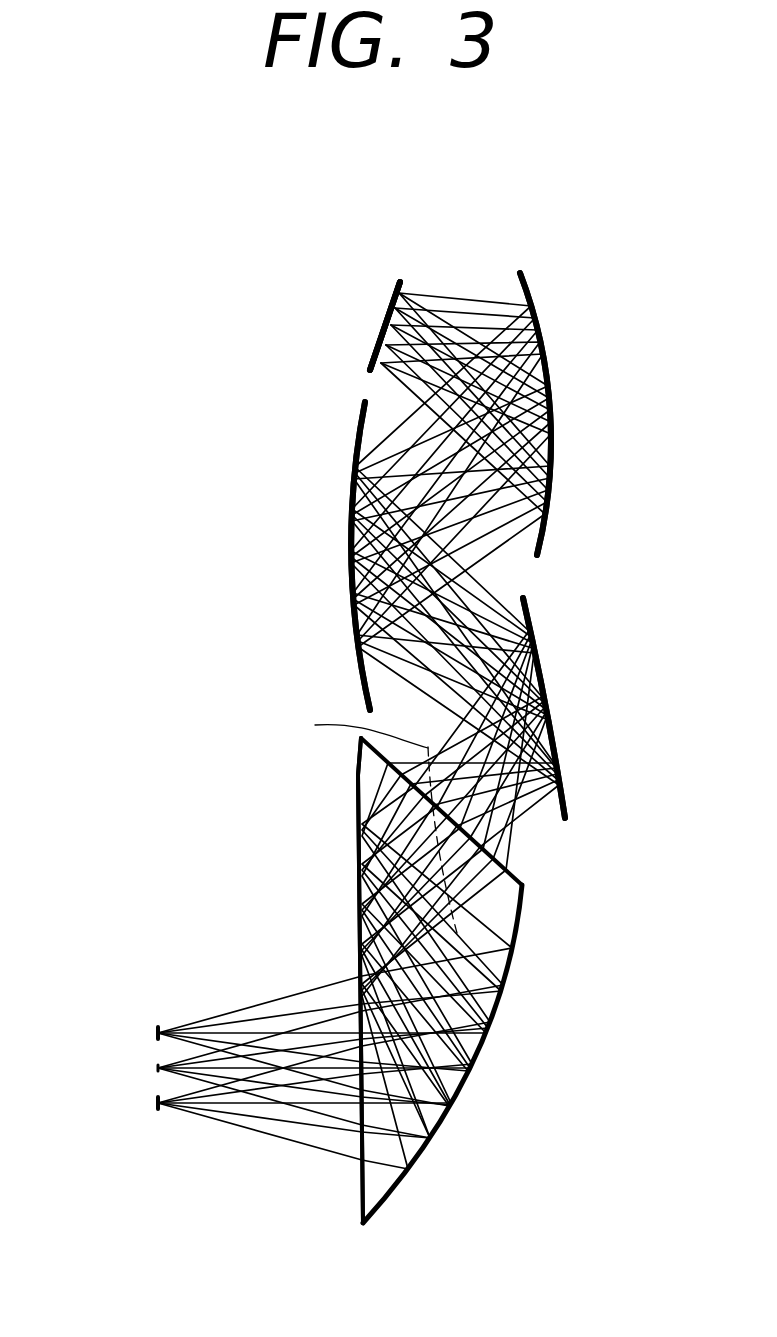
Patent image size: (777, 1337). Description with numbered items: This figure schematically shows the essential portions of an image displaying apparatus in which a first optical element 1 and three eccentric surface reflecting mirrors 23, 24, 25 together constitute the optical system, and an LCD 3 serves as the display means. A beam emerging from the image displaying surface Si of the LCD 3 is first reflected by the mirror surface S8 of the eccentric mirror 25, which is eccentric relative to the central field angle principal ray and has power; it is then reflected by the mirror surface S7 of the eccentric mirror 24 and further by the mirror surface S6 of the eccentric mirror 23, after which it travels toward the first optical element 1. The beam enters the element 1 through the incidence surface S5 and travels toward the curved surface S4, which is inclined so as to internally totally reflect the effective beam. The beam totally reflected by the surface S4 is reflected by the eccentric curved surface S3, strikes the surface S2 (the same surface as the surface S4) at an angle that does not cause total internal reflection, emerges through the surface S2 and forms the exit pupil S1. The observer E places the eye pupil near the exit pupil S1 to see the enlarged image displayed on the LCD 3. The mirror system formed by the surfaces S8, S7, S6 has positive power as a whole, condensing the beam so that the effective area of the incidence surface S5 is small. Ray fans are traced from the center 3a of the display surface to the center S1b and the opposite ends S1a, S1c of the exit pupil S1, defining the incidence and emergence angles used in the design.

The first optical element 1 is at (413, 980).
The LCD 3 is at (326, 275).
The center of the display surface 3a is at (387, 313).
The image displaying surface Si is at (382, 318).
The eccentric mirror 23 is at (582, 708).
The eccentric mirror 24 is at (313, 556).
The eccentric mirror 25 is at (596, 414).
The exit pupil S1 is at (102, 1036).
The end of the exit pupil S1a is at (155, 1037).
The center of the exit pupil S1b is at (157, 1068).
The end of the exit pupil S1c is at (155, 1102).
The surface S2 is at (290, 980).
The curved surface S3 is at (482, 1043).
The curved surface S4 is at (362, 903).
The incidence surface S5 is at (517, 868).
The mirror surface S6 is at (548, 706).
The mirror surface S7 is at (350, 563).
The mirror surface S8 is at (552, 442).
The observer E is at (165, 1140).